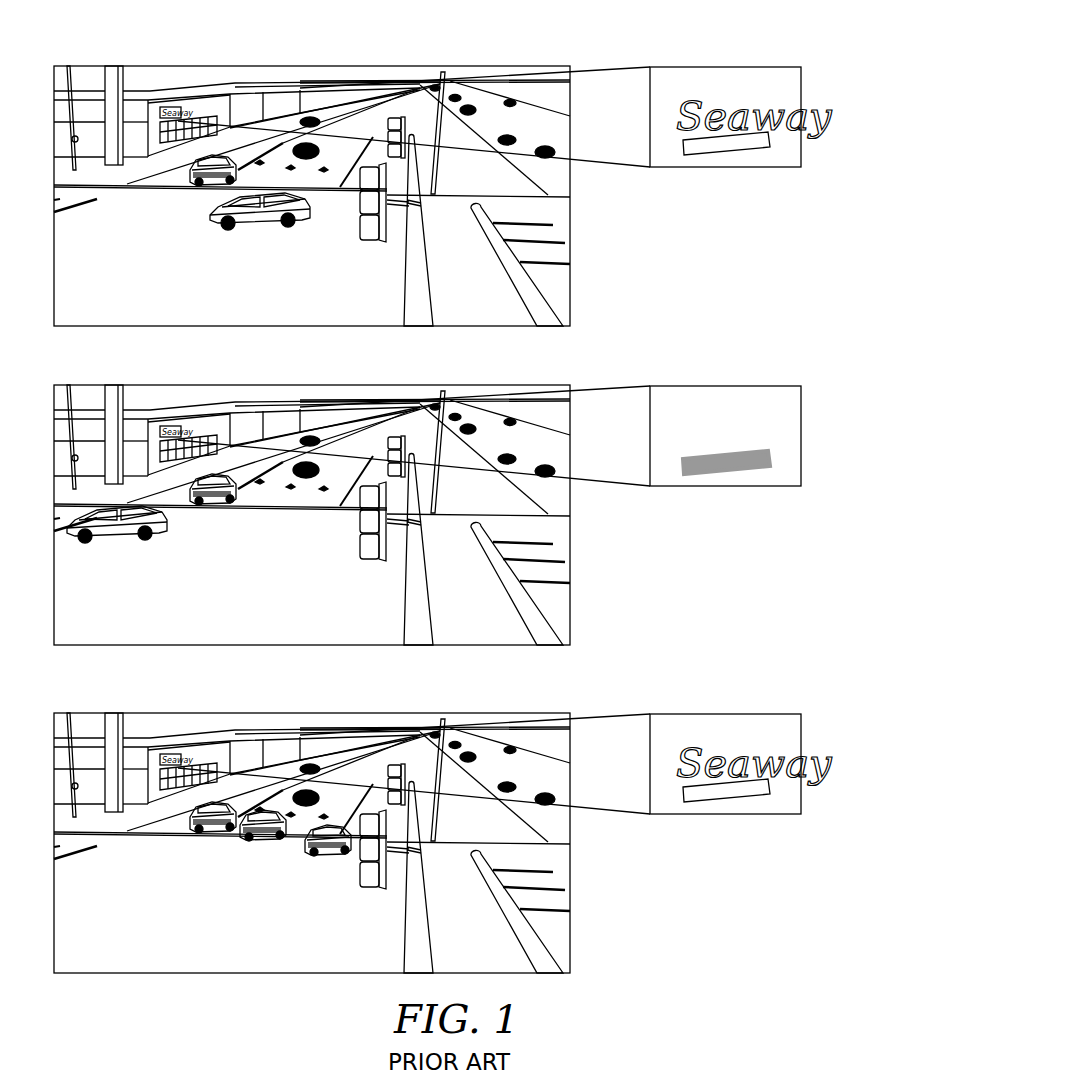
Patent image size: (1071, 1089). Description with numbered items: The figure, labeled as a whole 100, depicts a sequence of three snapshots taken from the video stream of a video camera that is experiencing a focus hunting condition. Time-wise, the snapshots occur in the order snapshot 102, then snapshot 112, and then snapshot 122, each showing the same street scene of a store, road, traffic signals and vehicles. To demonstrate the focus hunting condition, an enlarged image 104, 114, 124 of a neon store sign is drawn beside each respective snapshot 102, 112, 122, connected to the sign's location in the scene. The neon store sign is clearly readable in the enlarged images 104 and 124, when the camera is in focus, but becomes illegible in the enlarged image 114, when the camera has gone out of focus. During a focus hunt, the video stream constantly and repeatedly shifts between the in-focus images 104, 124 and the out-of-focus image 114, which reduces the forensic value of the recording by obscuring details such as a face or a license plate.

The prior art image sequence 100 is at (116, 29).
The snapshot 102 is at (573, 215).
The enlarged image 104 is at (727, 66).
The snapshot 112 is at (573, 534).
The enlarged image 114 is at (727, 385).
The snapshot 122 is at (573, 862).
The enlarged image 124 is at (727, 714).